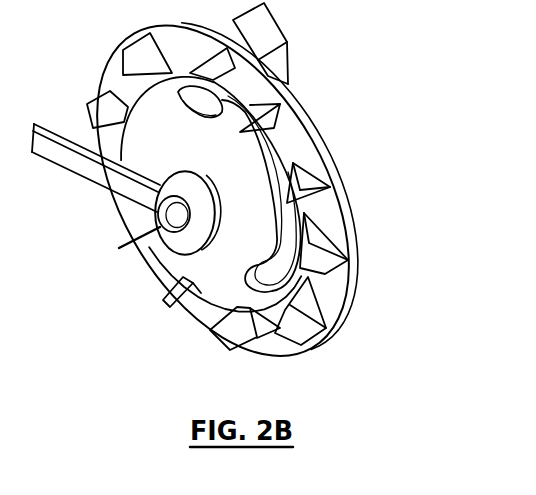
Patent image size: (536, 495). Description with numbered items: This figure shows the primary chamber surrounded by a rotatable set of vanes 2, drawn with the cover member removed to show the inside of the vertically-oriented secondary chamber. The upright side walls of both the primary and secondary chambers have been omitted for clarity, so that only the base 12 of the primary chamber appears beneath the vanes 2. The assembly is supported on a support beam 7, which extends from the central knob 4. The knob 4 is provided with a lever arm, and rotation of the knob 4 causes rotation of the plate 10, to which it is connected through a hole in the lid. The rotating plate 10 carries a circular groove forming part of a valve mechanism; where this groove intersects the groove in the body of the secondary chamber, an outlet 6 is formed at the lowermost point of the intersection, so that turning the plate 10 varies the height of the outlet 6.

The rotatable vanes 2 is at (302, 328).
The knob 4 is at (175, 216).
The outlet 6 is at (203, 99).
The support beam 7 is at (287, 27).
The plate 10 is at (226, 259).
The base 12 is at (296, 136).